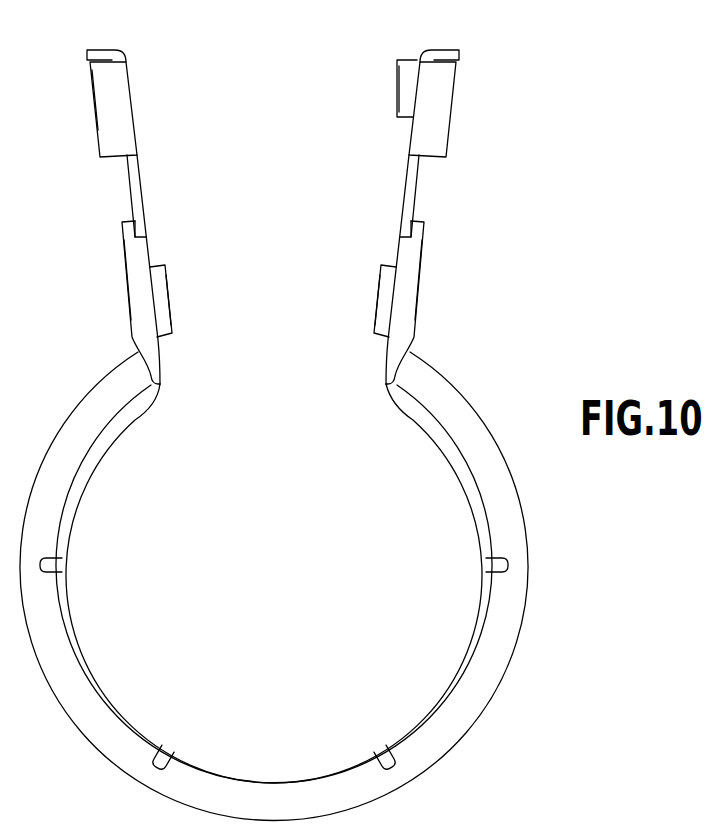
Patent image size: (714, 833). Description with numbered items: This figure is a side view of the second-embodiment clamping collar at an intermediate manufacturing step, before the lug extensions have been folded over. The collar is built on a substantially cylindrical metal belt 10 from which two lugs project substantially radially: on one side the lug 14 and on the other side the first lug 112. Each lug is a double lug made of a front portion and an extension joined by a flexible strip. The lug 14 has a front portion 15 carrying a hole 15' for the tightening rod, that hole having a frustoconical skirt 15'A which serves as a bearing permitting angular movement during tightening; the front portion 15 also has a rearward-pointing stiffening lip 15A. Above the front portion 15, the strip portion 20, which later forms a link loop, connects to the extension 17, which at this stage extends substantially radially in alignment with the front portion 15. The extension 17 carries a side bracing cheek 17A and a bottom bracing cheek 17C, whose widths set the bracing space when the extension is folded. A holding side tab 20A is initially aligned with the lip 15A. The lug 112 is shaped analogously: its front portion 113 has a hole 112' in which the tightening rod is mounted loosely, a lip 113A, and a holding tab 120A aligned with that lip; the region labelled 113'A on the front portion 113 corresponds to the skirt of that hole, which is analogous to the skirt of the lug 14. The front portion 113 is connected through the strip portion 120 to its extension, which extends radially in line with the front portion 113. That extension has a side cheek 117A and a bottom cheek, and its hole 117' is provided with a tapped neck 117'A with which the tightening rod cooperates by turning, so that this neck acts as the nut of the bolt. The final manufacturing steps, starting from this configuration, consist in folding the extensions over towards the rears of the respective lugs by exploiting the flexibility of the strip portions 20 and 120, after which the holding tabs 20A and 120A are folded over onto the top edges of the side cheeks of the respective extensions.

The belt 10 is at (460, 418).
The lug 14 is at (195, 228).
The front portion 15 is at (179, 302).
The stiffening lip 15A is at (135, 300).
The hole 15' is at (207, 301).
The skirt 15'A is at (199, 290).
The extension 17 is at (137, 110).
The bracing cheek 17A is at (113, 116).
The bracing cheek 17C is at (98, 50).
The strip portion 20 is at (143, 192).
The holding side tab 20A is at (125, 222).
The first lug 112 is at (337, 223).
The hole 112' is at (349, 301).
The front portion 113 is at (362, 302).
The lip 113A is at (410, 300).
The second stop block surface 113'A is at (339, 290).
The side cheek 117A is at (440, 117).
The hole 117' is at (363, 96).
The tapped neck 117'A is at (371, 67).
The strip portion 120 is at (404, 193).
The holding tab 120A is at (418, 223).